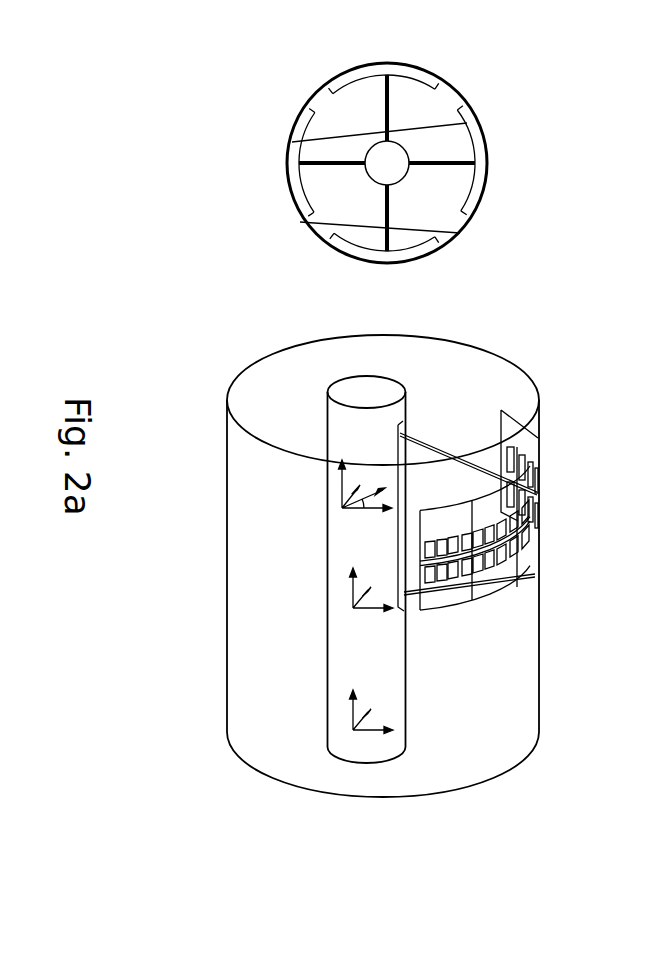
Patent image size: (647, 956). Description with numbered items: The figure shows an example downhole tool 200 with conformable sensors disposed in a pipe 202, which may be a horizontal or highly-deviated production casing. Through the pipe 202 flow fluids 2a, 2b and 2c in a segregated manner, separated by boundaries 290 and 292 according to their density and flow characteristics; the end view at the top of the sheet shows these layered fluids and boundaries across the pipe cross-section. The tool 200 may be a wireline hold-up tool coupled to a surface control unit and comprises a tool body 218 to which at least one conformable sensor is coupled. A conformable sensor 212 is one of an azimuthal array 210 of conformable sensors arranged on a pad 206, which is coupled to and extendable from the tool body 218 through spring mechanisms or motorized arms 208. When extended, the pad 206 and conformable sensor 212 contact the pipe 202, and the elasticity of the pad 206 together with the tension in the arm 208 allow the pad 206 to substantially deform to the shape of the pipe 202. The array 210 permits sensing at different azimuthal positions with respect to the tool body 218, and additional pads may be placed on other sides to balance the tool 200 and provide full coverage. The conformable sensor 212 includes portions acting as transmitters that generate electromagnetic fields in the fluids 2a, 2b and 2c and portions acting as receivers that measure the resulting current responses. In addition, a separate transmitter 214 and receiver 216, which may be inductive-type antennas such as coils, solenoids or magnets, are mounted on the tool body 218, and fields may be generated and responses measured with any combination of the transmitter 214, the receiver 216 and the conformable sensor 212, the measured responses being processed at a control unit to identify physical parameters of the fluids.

The downhole tool 200 is at (333, 380).
The pipe 202 is at (485, 350).
The fluid 2a is at (433, 108).
The fluid 2b is at (455, 182).
The fluid 2c is at (407, 242).
The boundary 290 is at (292, 142).
The boundary 292 is at (357, 230).
The arm 208 is at (445, 447).
The azimuthal array 210 is at (538, 540).
The conformable sensor 212 is at (477, 575).
The pad 206 is at (447, 608).
The tool body 218 is at (327, 492).
The transmitter 214 is at (348, 587).
The receiver 216 is at (348, 708).